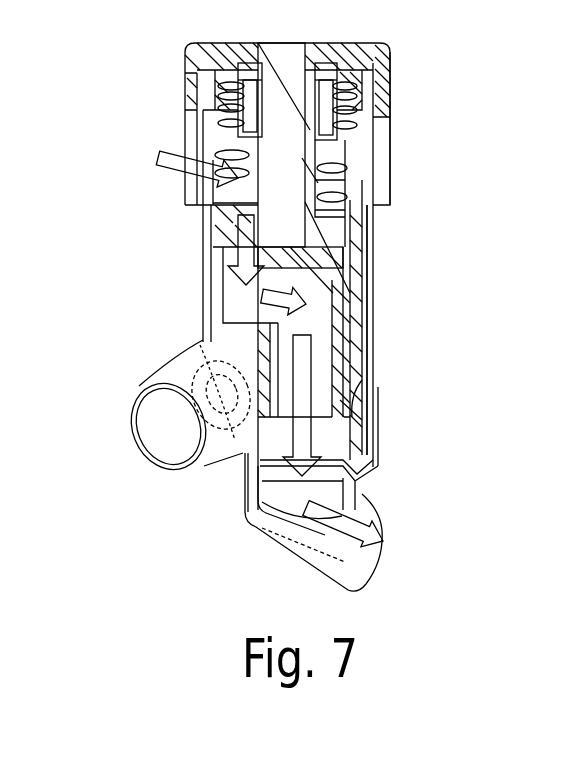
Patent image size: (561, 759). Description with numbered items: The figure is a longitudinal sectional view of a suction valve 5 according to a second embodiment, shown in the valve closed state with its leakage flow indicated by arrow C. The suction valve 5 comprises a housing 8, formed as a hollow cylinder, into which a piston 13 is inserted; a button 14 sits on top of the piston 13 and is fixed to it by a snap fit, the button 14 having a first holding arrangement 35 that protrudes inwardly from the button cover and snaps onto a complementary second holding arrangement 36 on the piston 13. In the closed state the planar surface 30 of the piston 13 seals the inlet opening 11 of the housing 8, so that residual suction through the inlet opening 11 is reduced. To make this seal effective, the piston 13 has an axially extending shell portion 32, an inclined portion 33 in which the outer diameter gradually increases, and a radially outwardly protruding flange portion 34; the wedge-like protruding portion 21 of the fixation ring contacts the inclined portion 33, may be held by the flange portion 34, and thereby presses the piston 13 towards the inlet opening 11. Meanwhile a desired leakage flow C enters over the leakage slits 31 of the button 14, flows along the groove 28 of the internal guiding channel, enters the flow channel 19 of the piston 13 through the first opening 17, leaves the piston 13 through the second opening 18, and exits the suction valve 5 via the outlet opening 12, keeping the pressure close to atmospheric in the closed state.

The suction valve 5 is at (146, 73).
The first holding arrangement 35 is at (331, 86).
The button 14 is at (389, 116).
The second holding arrangement 36 is at (264, 108).
The piston 13 is at (323, 251).
The leakage slits 31 is at (186, 187).
The first opening 17 is at (248, 293).
The groove 28 is at (223, 258).
The protruding portion 21 is at (360, 269).
The flow channel 19 is at (316, 311).
The planar surface 30 is at (251, 350).
The inlet opening 11 is at (166, 439).
The shell portion 32 is at (353, 342).
The inclined portion 33 is at (356, 383).
The flange portion 34 is at (359, 408).
The second opening 18 is at (332, 422).
The housing 8 is at (225, 512).
The outlet opening 12 is at (334, 549).
The leakage flow C is at (393, 540).